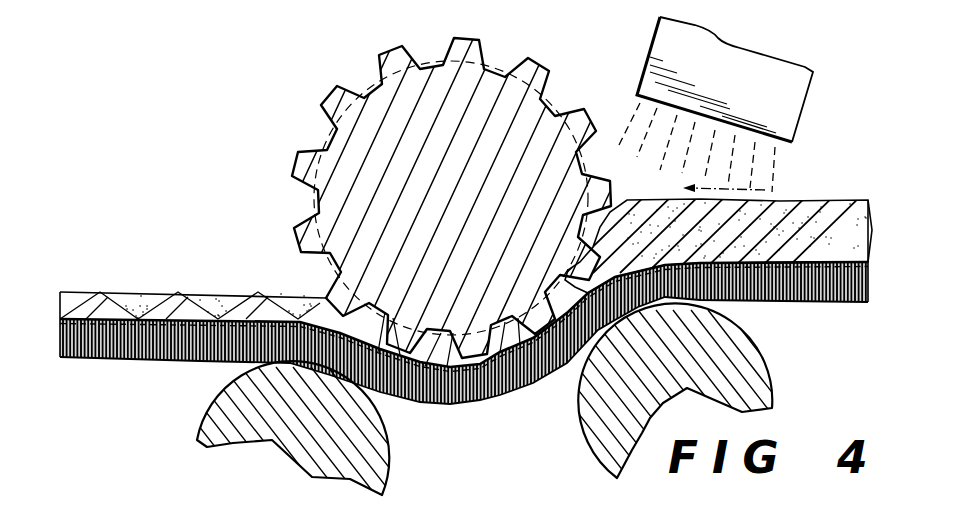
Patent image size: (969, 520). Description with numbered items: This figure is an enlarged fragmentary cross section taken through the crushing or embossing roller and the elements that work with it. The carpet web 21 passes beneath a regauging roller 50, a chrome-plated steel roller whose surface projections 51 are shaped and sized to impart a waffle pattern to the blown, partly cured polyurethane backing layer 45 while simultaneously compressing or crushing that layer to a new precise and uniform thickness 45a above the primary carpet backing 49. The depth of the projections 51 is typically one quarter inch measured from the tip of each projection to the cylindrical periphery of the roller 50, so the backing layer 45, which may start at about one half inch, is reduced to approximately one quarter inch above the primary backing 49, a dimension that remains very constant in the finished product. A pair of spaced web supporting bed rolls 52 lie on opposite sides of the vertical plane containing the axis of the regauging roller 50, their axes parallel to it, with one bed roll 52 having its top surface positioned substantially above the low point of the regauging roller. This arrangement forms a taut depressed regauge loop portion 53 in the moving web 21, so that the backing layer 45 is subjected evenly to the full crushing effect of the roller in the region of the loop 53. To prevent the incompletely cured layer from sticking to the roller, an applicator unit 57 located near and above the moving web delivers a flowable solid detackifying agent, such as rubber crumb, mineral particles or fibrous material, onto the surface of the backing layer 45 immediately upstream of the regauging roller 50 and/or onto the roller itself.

The carpet web 21 is at (823, 303).
The backing layer 45 is at (832, 205).
The new precise and uniform thickness 45a is at (183, 292).
The primary carpet backing 49 is at (123, 292).
The regauging roller 50 is at (464, 191).
The surface projections 51 is at (487, 49).
The bed rolls 52 is at (383, 457).
The regauge loop portion 53 is at (430, 403).
The applicator unit 57 is at (792, 85).